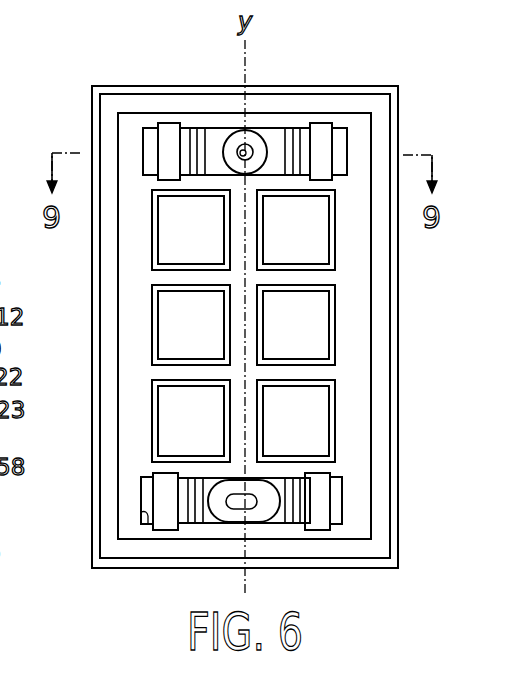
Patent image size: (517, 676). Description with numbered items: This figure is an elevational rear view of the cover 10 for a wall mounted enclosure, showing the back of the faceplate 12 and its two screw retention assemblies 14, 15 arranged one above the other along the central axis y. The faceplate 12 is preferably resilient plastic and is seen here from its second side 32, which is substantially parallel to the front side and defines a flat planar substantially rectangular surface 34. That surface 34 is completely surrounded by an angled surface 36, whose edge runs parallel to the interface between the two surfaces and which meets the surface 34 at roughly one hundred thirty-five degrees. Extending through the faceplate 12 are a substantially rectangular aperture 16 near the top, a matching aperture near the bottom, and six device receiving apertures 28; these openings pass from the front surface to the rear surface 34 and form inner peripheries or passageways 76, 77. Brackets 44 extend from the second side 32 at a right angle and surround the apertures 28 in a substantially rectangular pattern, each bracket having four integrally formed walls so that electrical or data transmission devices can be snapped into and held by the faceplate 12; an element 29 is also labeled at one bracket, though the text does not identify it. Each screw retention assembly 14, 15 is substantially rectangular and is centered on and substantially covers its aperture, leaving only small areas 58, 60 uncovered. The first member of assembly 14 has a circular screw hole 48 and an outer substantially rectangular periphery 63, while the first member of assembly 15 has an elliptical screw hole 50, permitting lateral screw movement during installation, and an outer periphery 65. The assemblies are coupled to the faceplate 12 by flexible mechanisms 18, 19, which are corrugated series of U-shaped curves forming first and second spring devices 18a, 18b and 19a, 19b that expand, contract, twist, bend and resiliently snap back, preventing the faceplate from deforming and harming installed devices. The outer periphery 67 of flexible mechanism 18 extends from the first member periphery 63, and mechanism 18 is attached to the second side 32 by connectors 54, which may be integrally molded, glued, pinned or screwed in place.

The cover 10 is at (100, 58).
The faceplate 12 is at (400, 380).
The screw retention assembly 14 is at (231, 100).
The screw retention assembly 15 is at (233, 512).
The aperture 16 is at (349, 130).
The flexible mechanism 18 is at (201, 122).
The first spring device 18a is at (196, 176).
The second spring device 18b is at (292, 176).
The flexible mechanism 19 is at (185, 530).
The first spring device 19a is at (200, 478).
The second spring device 19b is at (287, 478).
The device receiving apertures 28 is at (166, 216).
The cell inner wall 29 is at (162, 246).
The second side 32 is at (129, 377).
The rectangular surface 34 is at (138, 403).
The angled surface 36 is at (108, 447).
The brackets 44 is at (151, 320).
The screw hole 48 is at (243, 150).
The screw hole 50 is at (247, 510).
The connectors 54 is at (152, 152).
The small area 58 is at (338, 528).
The small area 60 is at (148, 502).
The outer periphery 63 is at (266, 130).
The outer periphery 65 is at (291, 524).
The outer periphery 67 is at (203, 524).
The inner periphery 76 is at (143, 130).
The inner periphery 77 is at (141, 515).